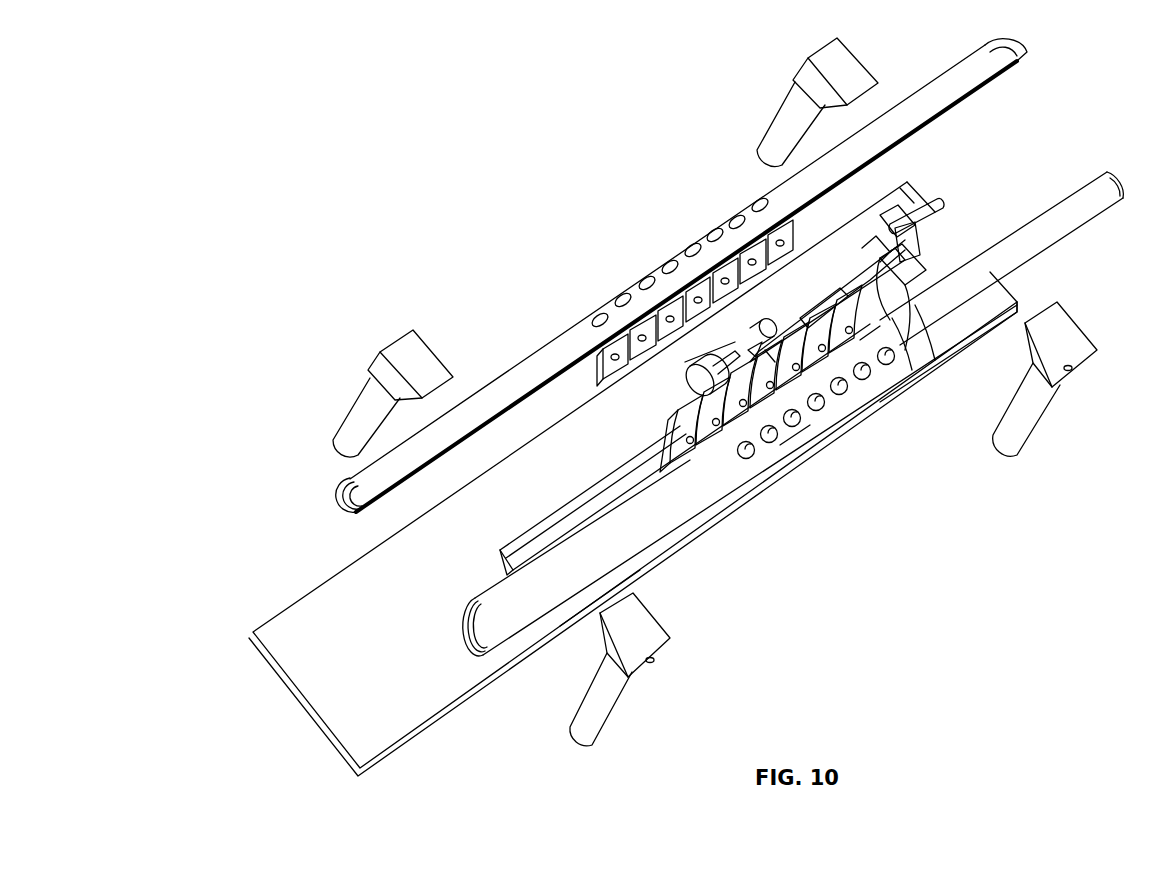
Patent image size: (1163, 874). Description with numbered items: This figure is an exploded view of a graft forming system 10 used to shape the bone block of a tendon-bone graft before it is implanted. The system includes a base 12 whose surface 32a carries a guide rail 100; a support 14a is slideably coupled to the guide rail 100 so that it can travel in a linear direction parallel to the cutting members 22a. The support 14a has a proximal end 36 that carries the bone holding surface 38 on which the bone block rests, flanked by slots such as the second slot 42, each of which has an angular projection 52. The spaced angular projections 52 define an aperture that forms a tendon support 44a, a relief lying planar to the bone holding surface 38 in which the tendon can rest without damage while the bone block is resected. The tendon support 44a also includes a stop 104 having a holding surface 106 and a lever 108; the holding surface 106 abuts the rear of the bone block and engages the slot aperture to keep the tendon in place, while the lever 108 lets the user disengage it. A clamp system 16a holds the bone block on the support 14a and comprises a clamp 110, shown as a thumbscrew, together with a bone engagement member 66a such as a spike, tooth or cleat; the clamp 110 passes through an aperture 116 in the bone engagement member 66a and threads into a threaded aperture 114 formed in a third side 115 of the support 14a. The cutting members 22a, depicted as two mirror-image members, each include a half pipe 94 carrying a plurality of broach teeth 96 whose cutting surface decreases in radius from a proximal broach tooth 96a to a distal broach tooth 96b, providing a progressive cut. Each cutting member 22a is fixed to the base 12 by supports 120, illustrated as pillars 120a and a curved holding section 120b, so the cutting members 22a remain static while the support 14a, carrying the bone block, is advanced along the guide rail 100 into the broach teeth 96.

The graft forming system 10 is at (252, 228).
The base 12 is at (318, 716).
The support 14a is at (896, 214).
The clamp system 16a is at (712, 354).
The cutting members 22a is at (344, 486).
The surface 32a is at (400, 735).
The proximal end 36 is at (915, 320).
The bone holding surface 38 is at (868, 345).
The second side or slot 42 is at (795, 445).
The tendon support 44a is at (932, 246).
The angular projection 52 is at (892, 330).
The bone engagement member 66a is at (818, 328).
The half pipe 94 is at (1026, 50).
The broach teeth 96 is at (635, 330).
The proximal broach tooth 96a is at (778, 236).
The distal broach tooth 96b is at (606, 348).
The guide rail 100 is at (506, 545).
The stop 104 is at (944, 196).
The holding surface 106 is at (915, 250).
The lever 108 is at (945, 216).
The clamp 110 is at (690, 390).
The threaded aperture 114 is at (817, 290).
The third side 115 is at (758, 350).
The aperture 116 is at (775, 305).
The supports 120 is at (707, 394).
The pillars 120a is at (335, 430).
The curved holding section 120b is at (428, 352).